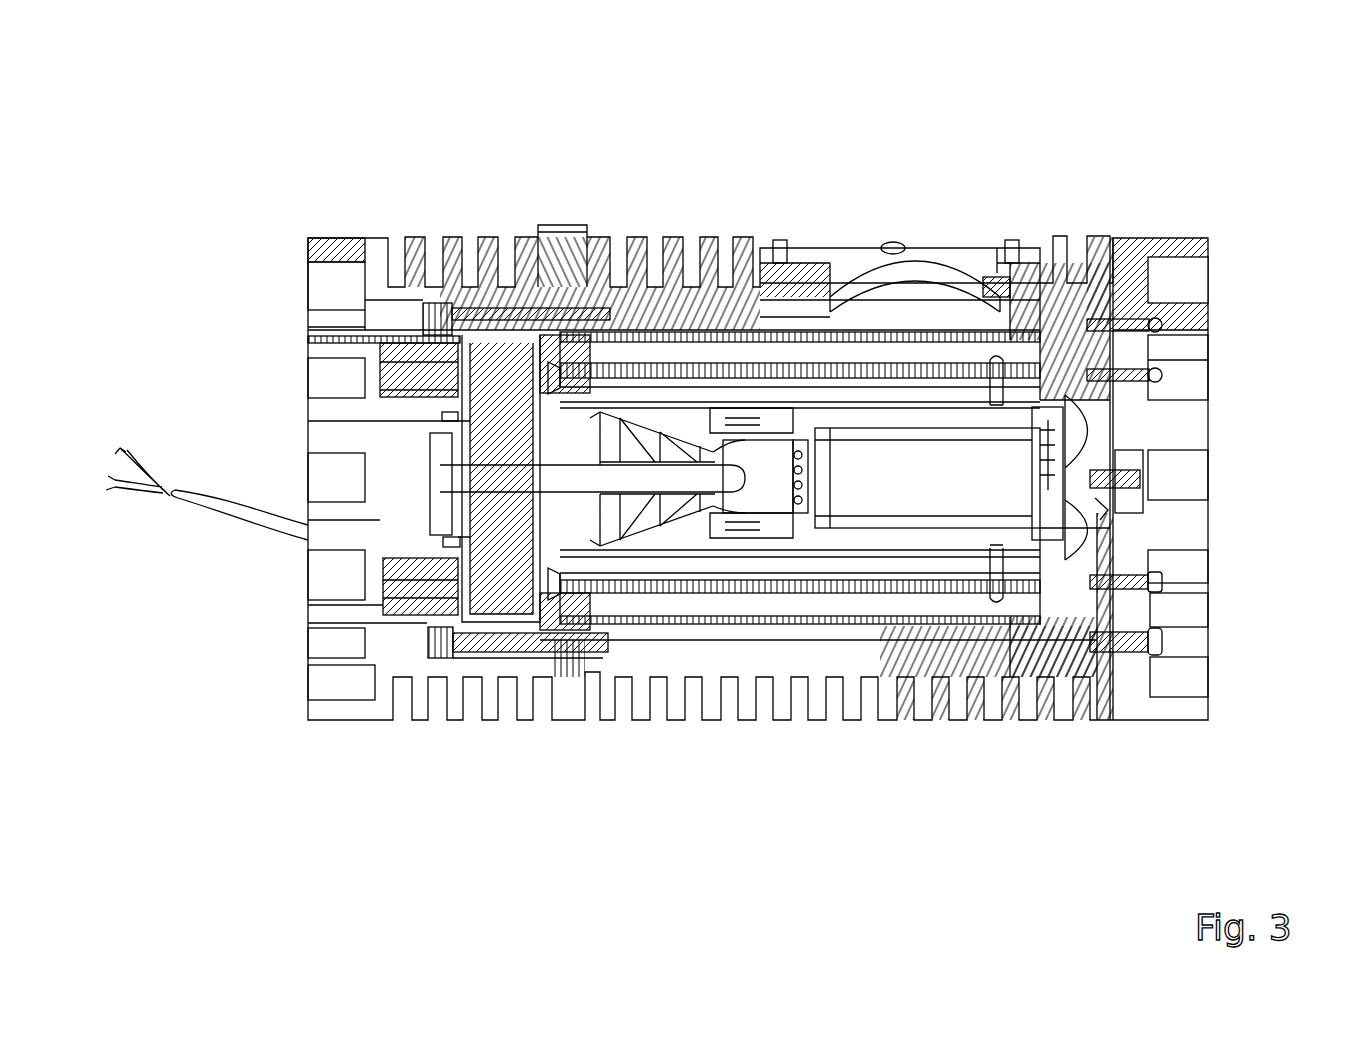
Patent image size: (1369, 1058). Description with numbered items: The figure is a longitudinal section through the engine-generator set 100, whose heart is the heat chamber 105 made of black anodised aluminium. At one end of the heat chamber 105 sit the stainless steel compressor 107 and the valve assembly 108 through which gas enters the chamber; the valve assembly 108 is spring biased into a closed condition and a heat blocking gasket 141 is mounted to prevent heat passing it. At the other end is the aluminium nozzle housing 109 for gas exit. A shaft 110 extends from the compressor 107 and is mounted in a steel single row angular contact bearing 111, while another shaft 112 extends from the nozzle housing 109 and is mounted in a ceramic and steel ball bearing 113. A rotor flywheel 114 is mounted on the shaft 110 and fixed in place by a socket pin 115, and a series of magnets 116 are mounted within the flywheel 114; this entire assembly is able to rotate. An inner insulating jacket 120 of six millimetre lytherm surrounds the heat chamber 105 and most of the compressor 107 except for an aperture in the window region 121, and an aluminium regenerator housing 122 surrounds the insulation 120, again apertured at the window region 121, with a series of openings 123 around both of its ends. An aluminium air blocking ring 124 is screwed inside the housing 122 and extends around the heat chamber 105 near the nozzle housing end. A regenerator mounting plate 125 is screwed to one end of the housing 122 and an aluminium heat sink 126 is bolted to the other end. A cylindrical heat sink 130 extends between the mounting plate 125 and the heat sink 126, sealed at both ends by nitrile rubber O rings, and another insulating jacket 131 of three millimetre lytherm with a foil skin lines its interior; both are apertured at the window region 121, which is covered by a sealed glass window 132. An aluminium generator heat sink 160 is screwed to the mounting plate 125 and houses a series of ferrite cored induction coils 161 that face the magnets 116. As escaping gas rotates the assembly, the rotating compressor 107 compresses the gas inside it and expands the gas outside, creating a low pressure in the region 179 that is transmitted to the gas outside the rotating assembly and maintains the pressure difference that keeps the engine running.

The engine-generator set 100 is at (85, 107).
The heat chamber 105 is at (905, 540).
The compressor 107 is at (650, 423).
The valve assembly 108 is at (757, 537).
The nozzle housing 109 is at (1070, 435).
The shaft 110 is at (577, 477).
The single row angular contact bearing 111 is at (500, 450).
The shaft 112 is at (1097, 470).
The ball bearing 113 is at (1140, 498).
The rotor flywheel 114 is at (497, 428).
The socket pin 115 is at (440, 480).
The magnets 116 is at (435, 330).
The inner insulating jacket 120 is at (718, 390).
The window region 121 is at (900, 232).
The regenerator housing 122 is at (693, 370).
The openings 123 is at (545, 372).
The air blocking ring 124 is at (1010, 578).
The regenerator mounting plate 125 is at (555, 265).
The heat sink 126 is at (1160, 248).
The cylindrical heat sink 130 is at (836, 648).
The insulating jacket 131 is at (672, 335).
The glass window 132 is at (956, 300).
The heat blocking gasket 141 is at (773, 543).
The generator heat sink 160 is at (335, 245).
The induction coils 161 is at (405, 385).
The low pressure region 179 is at (1050, 350).